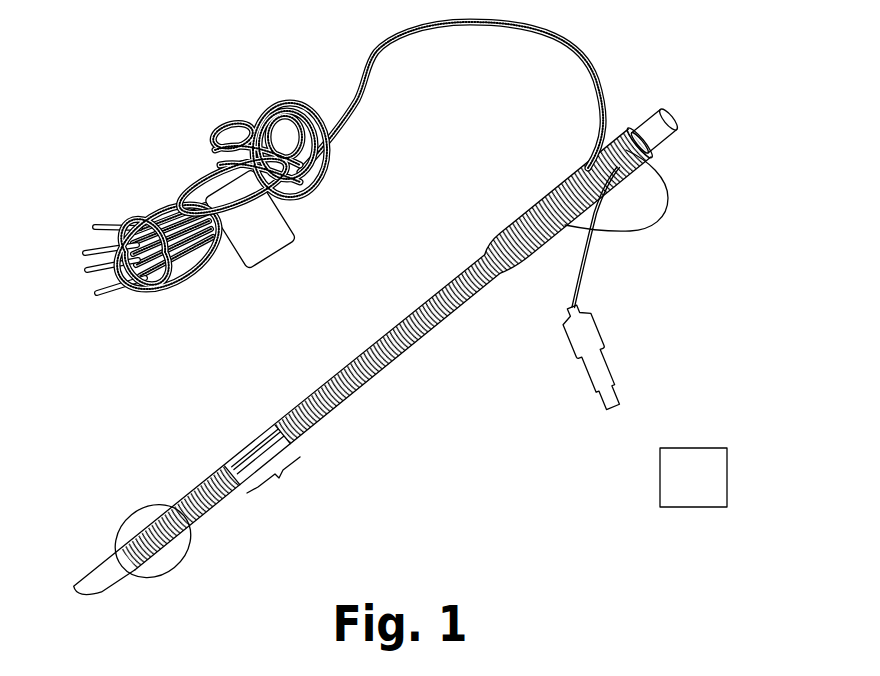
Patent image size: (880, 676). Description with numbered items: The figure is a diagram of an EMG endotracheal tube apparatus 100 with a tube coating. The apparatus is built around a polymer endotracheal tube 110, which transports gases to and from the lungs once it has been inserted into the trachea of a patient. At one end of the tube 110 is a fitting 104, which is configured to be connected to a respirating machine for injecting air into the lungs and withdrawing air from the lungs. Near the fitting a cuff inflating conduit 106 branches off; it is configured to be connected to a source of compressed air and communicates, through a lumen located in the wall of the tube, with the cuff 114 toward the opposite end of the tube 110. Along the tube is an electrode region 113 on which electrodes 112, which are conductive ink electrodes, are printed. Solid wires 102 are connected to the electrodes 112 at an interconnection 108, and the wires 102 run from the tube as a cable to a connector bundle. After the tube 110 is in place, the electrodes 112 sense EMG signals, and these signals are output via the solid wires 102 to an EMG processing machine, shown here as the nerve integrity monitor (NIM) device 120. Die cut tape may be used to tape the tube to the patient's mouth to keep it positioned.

The EMG endotracheal tube apparatus 100 is at (157, 161).
The solid wires 102 is at (383, 50).
The fitting 104 is at (659, 106).
The cuff inflating conduit 106 is at (655, 223).
The interconnection 108 is at (555, 257).
The polymer endotracheal tube 110 is at (391, 330).
The electrodes 112 is at (256, 440).
The electrode region 113 is at (282, 478).
The cuff 114 is at (204, 541).
The nerve integrity monitor (NIM) device 120 is at (697, 450).